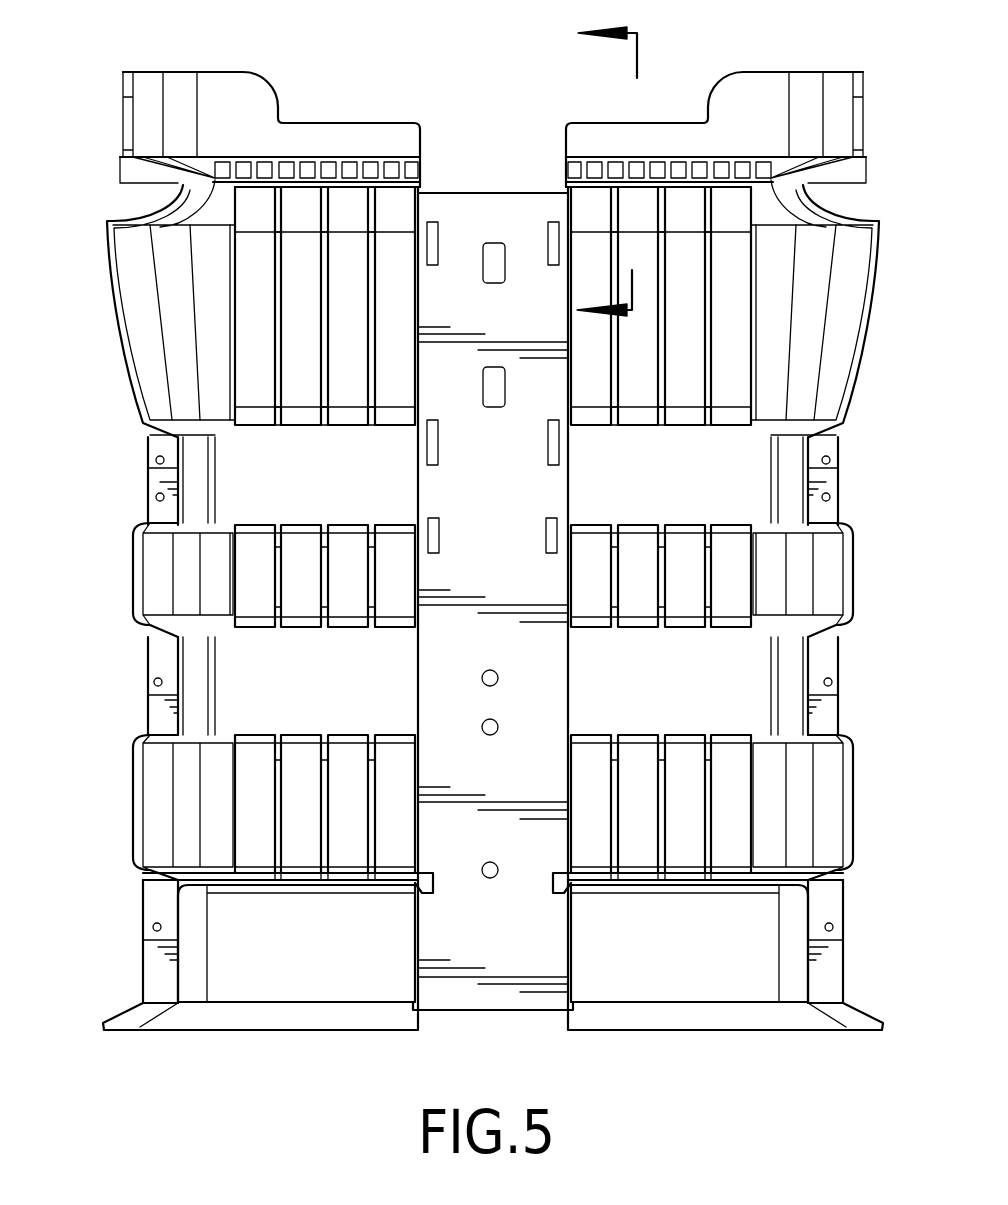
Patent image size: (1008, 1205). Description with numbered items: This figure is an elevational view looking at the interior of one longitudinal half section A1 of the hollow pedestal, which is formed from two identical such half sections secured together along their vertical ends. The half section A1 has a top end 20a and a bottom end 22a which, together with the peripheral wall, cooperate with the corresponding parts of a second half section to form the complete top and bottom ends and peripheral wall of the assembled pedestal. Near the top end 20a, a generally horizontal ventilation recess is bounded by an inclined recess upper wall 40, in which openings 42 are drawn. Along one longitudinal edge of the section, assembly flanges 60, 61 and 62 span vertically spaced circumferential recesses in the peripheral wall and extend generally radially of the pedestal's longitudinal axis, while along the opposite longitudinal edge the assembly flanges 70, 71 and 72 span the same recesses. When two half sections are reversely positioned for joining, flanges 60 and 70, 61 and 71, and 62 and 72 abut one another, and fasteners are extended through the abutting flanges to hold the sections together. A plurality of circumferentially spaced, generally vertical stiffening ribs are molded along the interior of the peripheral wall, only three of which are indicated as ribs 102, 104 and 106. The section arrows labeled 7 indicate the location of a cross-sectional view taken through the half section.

The top end 20a is at (210, 72).
The bottom end 22a is at (215, 1028).
The inclined recess upper wall 40 is at (278, 132).
The connector slot 42 is at (371, 168).
The assembly flange 60 is at (837, 480).
The assembly flange 61 is at (823, 662).
The assembly flange 62 is at (822, 972).
The assembly flange 70 is at (153, 482).
The assembly flange 71 is at (150, 694).
The assembly flange 72 is at (153, 958).
The stiffening rib 102 is at (239, 405).
The stiffening rib 104 is at (233, 590).
The stiffening rib 106 is at (235, 845).
The pedestal half section A1 is at (112, 608).
The section line 7- 7 is at (588, 177).